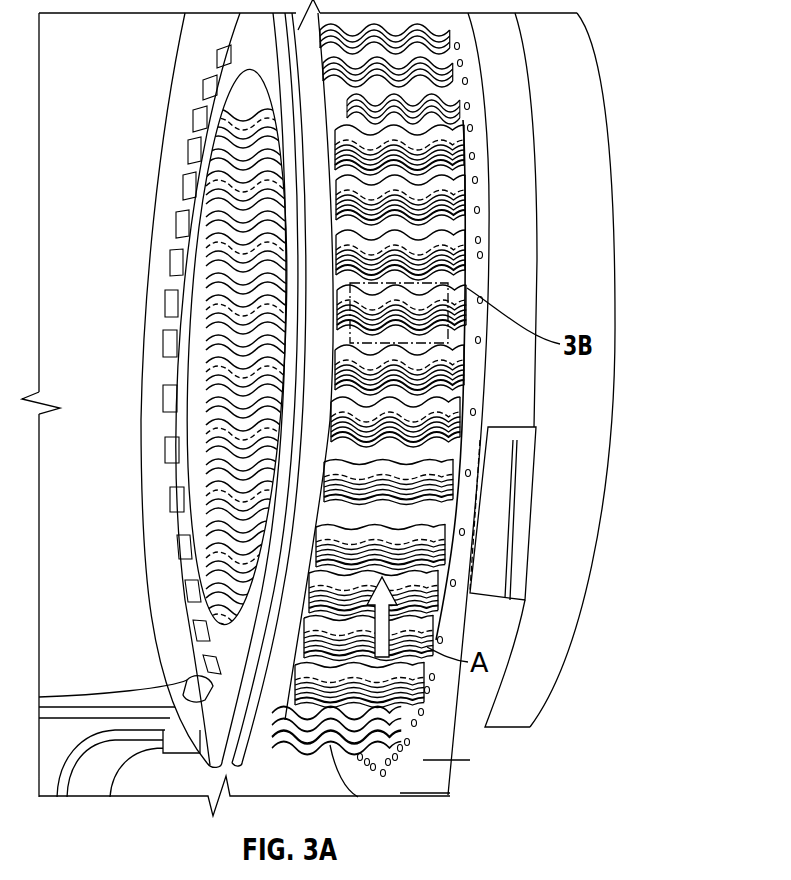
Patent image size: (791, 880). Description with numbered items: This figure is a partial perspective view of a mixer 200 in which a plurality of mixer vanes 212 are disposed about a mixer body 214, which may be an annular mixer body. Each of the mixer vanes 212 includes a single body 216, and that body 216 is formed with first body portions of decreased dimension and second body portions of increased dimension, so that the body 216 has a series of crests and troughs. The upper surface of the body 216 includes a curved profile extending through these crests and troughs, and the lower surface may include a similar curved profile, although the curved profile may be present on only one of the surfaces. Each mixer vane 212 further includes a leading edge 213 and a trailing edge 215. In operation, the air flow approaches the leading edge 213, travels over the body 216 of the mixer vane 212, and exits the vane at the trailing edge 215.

The mixer 200 is at (623, 109).
The mixer vanes 212 is at (457, 388).
The leading edge 213 is at (455, 530).
The mixer body 214 is at (188, 42).
The trailing edge 215 is at (462, 517).
The body 216 is at (466, 400).